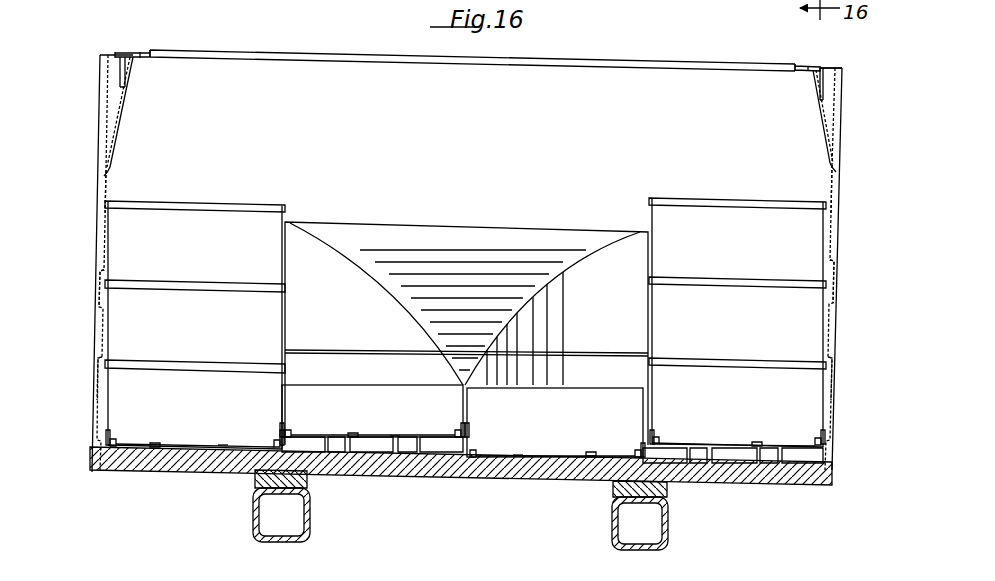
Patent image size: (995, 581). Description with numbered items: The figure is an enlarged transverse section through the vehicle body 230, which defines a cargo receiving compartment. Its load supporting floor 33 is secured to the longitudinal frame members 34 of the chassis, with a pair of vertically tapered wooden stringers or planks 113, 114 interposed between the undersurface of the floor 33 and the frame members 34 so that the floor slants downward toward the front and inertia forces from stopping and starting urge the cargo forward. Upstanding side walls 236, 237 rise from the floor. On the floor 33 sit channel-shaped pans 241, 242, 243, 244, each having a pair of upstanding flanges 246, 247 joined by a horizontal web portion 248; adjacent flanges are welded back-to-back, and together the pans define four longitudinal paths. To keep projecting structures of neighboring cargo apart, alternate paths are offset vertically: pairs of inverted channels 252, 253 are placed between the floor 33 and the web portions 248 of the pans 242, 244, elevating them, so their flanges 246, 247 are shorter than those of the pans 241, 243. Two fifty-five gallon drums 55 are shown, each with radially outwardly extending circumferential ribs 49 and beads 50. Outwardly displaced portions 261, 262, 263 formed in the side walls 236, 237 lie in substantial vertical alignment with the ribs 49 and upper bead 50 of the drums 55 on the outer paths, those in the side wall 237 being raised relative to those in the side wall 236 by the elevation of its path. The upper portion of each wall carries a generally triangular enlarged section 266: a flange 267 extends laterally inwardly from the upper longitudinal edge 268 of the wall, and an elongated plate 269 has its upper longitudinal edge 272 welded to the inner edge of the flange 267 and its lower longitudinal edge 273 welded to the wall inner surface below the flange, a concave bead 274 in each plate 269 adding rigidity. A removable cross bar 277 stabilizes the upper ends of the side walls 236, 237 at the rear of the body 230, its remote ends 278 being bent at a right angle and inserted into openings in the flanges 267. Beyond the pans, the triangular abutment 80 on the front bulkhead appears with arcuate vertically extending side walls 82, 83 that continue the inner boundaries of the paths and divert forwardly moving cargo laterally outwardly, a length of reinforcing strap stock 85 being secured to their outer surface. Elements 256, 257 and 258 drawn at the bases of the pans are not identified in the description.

The body 230 is at (742, 52).
The cross bar 277 is at (355, 60).
The upper longitudinal edge 272 is at (140, 57).
The side wall 236 is at (88, 268).
The side wall 237 is at (842, 265).
The upper longitudinal edge 268 is at (112, 53).
The enlarged section 266 is at (107, 110).
The flange 267 is at (117, 55).
The remote ends 278 is at (128, 78).
The concave bead 274 is at (122, 108).
The elongated plate 269 is at (115, 145).
The lower longitudinal edge 273 is at (110, 170).
The outwardly displaced portion 263 is at (98, 193).
The outwardly displaced portion 262 is at (95, 287).
The outwardly displaced portion 261 is at (93, 380).
The drum 55 is at (255, 200).
The bead 50 is at (170, 205).
The rib 49 is at (240, 287).
The abutment 80 is at (537, 220).
The reinforcing strap stock 85 is at (352, 357).
The side wall 82 is at (390, 405).
The side wall 83 is at (569, 417).
The inverted channel 252 is at (372, 445).
The inverted channel 253 is at (733, 456).
The floor 33 is at (372, 477).
The stringer or plank 113 is at (307, 477).
The stringer or plank 114 is at (613, 487).
The longitudinal frame member 34 is at (253, 517).
The upstanding flange 246 is at (93, 438).
The upstanding flange 247 is at (277, 437).
The left foot 256 is at (113, 440).
The right foot 257 is at (270, 443).
The base plate 258 is at (193, 447).
The web portion 248 is at (153, 447).
The channel-shaped pan 241 is at (222, 443).
The channel-shaped pan 242 is at (395, 433).
The channel-shaped pan 243 is at (518, 452).
The channel-shaped pan 244 is at (682, 442).